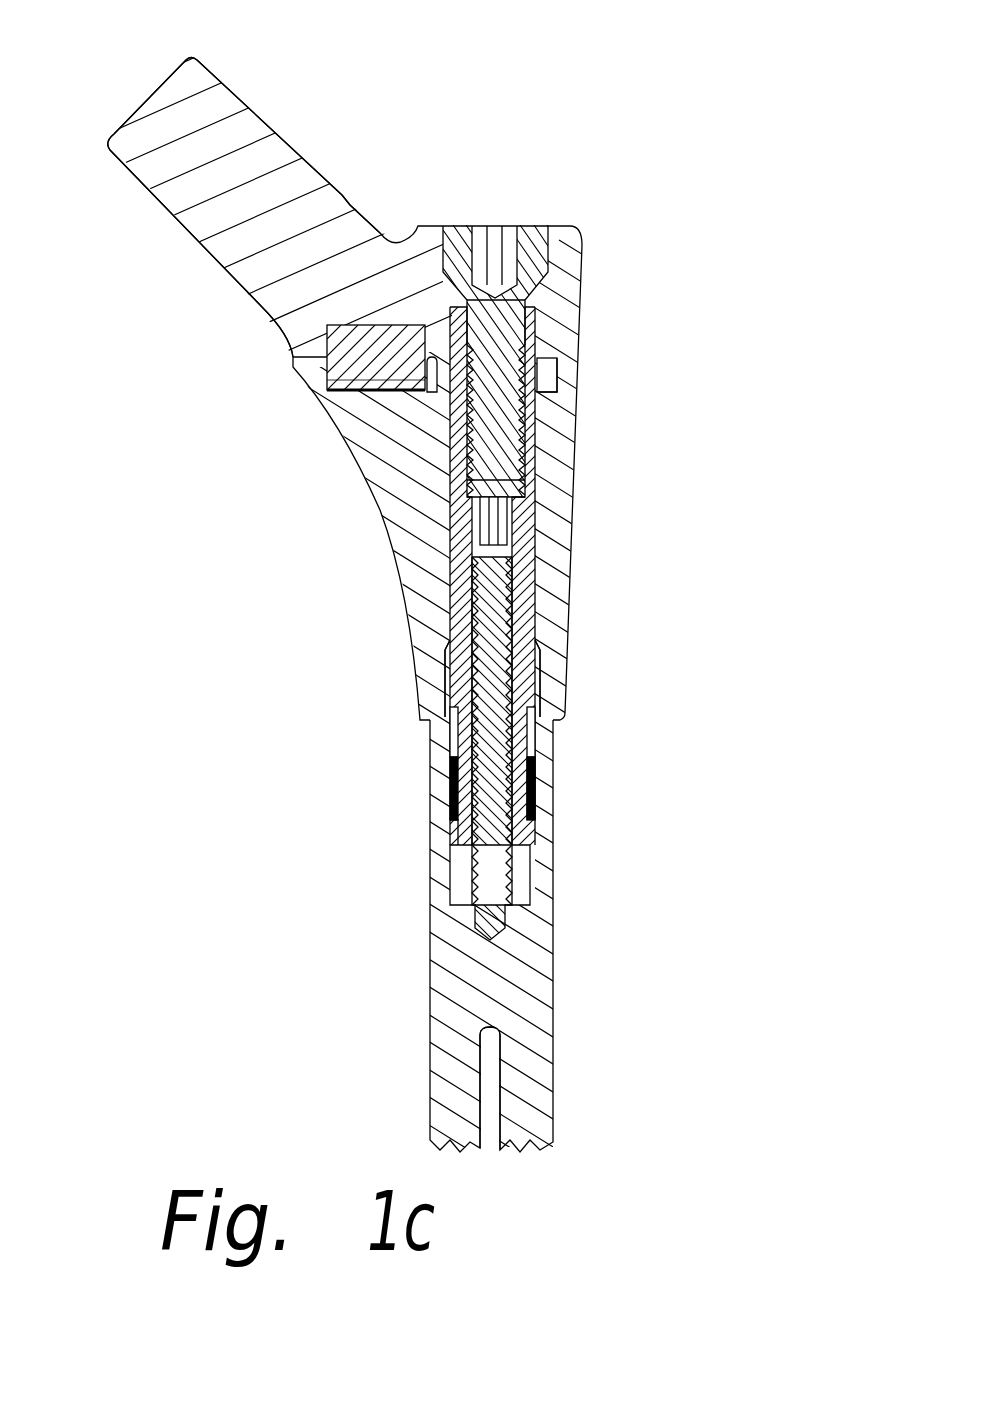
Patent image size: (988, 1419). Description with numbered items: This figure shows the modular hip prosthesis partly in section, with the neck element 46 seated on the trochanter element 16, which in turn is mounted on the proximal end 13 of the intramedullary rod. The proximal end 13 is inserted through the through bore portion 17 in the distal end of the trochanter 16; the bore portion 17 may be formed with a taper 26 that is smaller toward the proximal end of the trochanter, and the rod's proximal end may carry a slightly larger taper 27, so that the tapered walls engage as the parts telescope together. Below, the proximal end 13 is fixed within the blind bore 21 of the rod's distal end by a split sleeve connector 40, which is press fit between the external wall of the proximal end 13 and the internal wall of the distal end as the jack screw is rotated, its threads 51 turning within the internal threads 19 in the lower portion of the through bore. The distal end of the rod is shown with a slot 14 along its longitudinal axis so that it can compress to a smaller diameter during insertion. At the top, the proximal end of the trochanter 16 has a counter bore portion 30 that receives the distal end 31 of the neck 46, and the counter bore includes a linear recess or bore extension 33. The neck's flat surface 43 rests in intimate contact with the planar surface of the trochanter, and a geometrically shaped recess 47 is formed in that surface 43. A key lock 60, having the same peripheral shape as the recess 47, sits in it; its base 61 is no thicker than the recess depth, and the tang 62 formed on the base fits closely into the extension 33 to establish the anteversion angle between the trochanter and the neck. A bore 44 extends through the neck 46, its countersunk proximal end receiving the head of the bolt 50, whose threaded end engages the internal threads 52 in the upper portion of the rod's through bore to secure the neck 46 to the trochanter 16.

The proximal end 13 is at (445, 640).
The slot 14 is at (555, 742).
The trochanter element 16 is at (555, 583).
The through bore portion 17 is at (450, 567).
The internal threads 19 is at (455, 830).
The blind bore 21 is at (520, 888).
The taper 26 is at (445, 702).
The taper 27 is at (537, 688).
The counter bore portion 30 is at (557, 383).
The distal end of the neck element 31 is at (543, 370).
The bore extension 33 is at (392, 385).
The split sleeve connector 40 is at (535, 790).
The flat surface 43 is at (303, 350).
The bore 44 is at (527, 323).
The neck element 46 is at (237, 120).
The recess 47 is at (337, 307).
The bolt 50 is at (533, 225).
The threads of the jack screw 51 is at (470, 868).
The internal threads 52 is at (512, 323).
The key lock 60 is at (327, 368).
The base 61 is at (432, 398).
The tang 62 is at (357, 372).